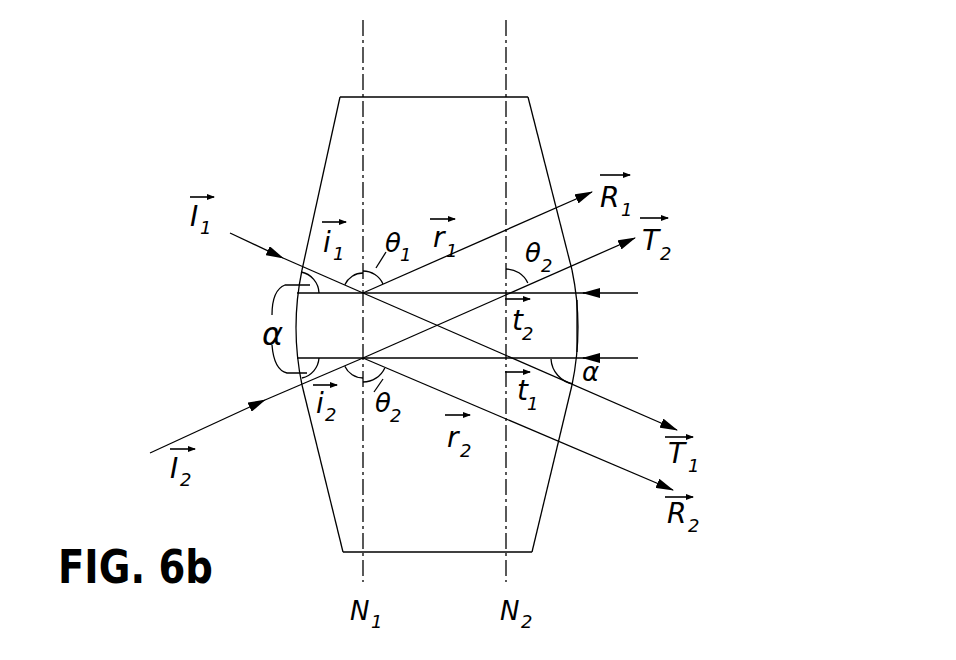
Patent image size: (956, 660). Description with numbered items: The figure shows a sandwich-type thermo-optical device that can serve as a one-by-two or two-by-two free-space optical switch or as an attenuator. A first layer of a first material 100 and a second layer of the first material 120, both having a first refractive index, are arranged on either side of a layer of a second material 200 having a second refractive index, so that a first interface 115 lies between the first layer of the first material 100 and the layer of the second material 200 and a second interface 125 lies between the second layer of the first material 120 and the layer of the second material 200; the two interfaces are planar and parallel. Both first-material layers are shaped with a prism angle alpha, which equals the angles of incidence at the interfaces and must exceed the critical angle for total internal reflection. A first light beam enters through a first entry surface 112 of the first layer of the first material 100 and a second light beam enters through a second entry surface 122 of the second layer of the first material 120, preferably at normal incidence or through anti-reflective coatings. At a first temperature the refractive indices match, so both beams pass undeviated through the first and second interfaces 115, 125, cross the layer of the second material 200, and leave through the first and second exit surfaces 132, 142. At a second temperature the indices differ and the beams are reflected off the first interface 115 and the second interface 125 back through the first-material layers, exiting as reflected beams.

The first layer of the first material 100 is at (451, 348).
The first entry surface 112 is at (325, 162).
The first exit surface 132 is at (547, 167).
The second entry surface 122 is at (330, 505).
The second exit surface 142 is at (540, 518).
The second layer of the first material 120 is at (420, 532).
The layer of the second material 200 is at (567, 323).
The first interface 115 is at (494, 294).
The second interface 125 is at (494, 353).